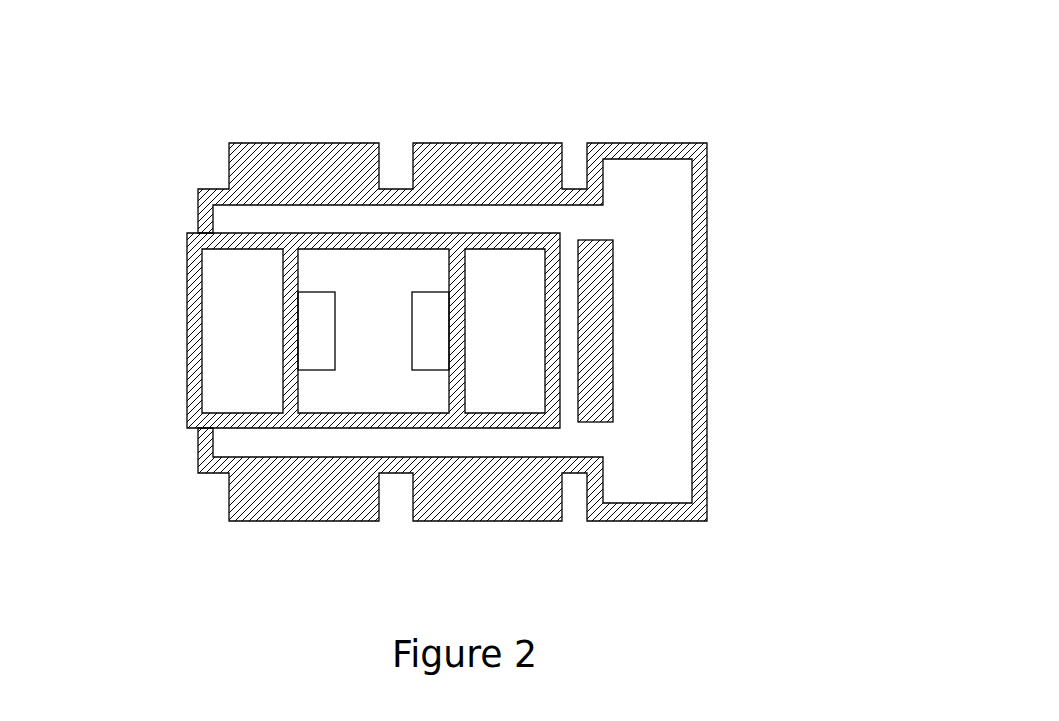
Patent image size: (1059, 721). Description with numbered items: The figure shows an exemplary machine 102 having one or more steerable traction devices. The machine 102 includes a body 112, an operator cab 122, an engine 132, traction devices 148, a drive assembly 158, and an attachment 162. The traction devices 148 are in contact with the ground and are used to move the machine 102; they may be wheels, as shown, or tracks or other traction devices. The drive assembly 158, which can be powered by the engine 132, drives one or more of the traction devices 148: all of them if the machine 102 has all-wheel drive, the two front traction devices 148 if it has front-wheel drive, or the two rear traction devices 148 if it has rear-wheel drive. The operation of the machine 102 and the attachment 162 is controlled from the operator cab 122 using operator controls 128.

The machine 102 is at (812, 96).
The body 112 is at (122, 258).
The operator cab 122 is at (402, 350).
The operator controls 128 is at (440, 325).
The engine 132 is at (272, 350).
The traction devices 148 is at (301, 160).
The drive assembly 158 is at (316, 320).
The attachment 162 is at (682, 353).